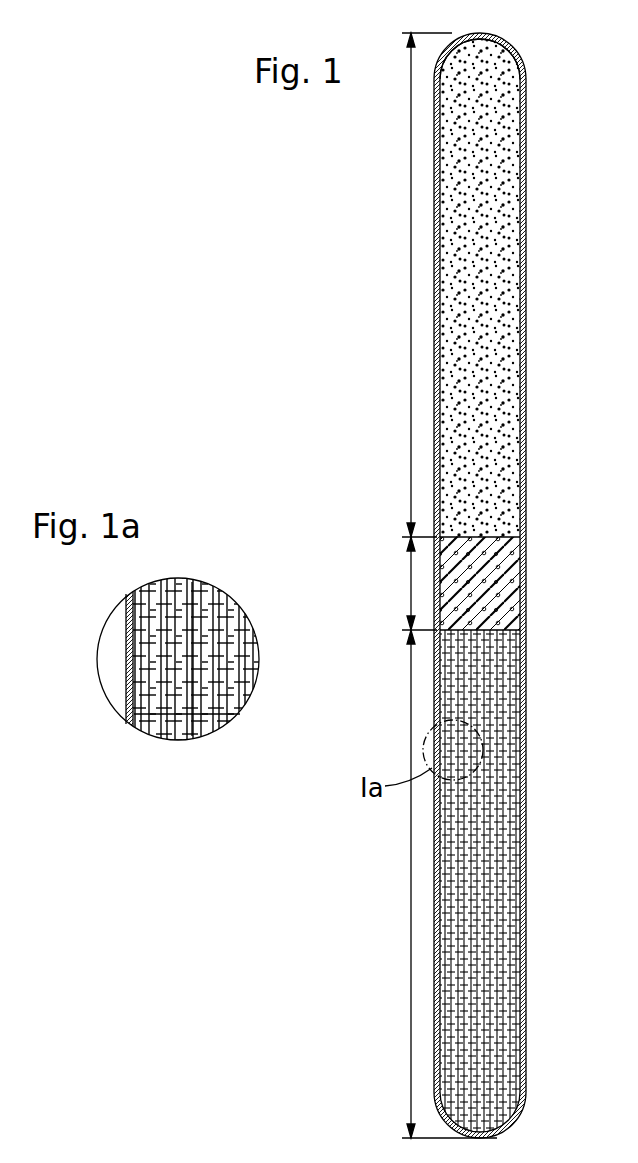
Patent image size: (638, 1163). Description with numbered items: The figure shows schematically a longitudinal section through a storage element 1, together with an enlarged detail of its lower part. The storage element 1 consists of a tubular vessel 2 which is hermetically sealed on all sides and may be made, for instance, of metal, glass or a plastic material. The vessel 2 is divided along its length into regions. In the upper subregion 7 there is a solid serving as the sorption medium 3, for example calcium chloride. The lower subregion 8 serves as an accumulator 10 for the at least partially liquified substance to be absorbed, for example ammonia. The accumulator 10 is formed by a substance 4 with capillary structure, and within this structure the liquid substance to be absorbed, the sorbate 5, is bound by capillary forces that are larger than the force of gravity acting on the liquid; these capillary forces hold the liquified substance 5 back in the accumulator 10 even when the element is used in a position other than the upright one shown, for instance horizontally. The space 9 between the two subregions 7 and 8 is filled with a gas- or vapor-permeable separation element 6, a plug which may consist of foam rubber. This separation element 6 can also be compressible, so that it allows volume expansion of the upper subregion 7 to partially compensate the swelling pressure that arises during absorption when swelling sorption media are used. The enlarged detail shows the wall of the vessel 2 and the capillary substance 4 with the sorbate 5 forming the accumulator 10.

In FIG. 1, the storage element 1 is at (534, 386).
In FIG. 1a, the storage element 1 is at (113, 603).
In FIG. 1, the tubular vessel 2 is at (526, 232).
In FIG. 1a, the tubular vessel 2 is at (128, 702).
In FIG. 1, the sorption medium 3 is at (518, 122).
In FIG. 1a, the substance with capillary structure 4 is at (193, 588).
In FIG. 1a, the liquid substance to be absorbed (sorbate) 5 is at (148, 714).
In FIG. 1, the separation element (plug) 6 is at (505, 605).
In FIG. 1, the upper subregion 7 is at (411, 267).
In FIG. 1, the lower subregion 8 is at (411, 855).
In FIG. 1, the space between the two subregions 9 is at (411, 582).
In FIG. 1, the accumulator 10 is at (534, 979).
In FIG. 1a, the accumulator 10 is at (197, 749).